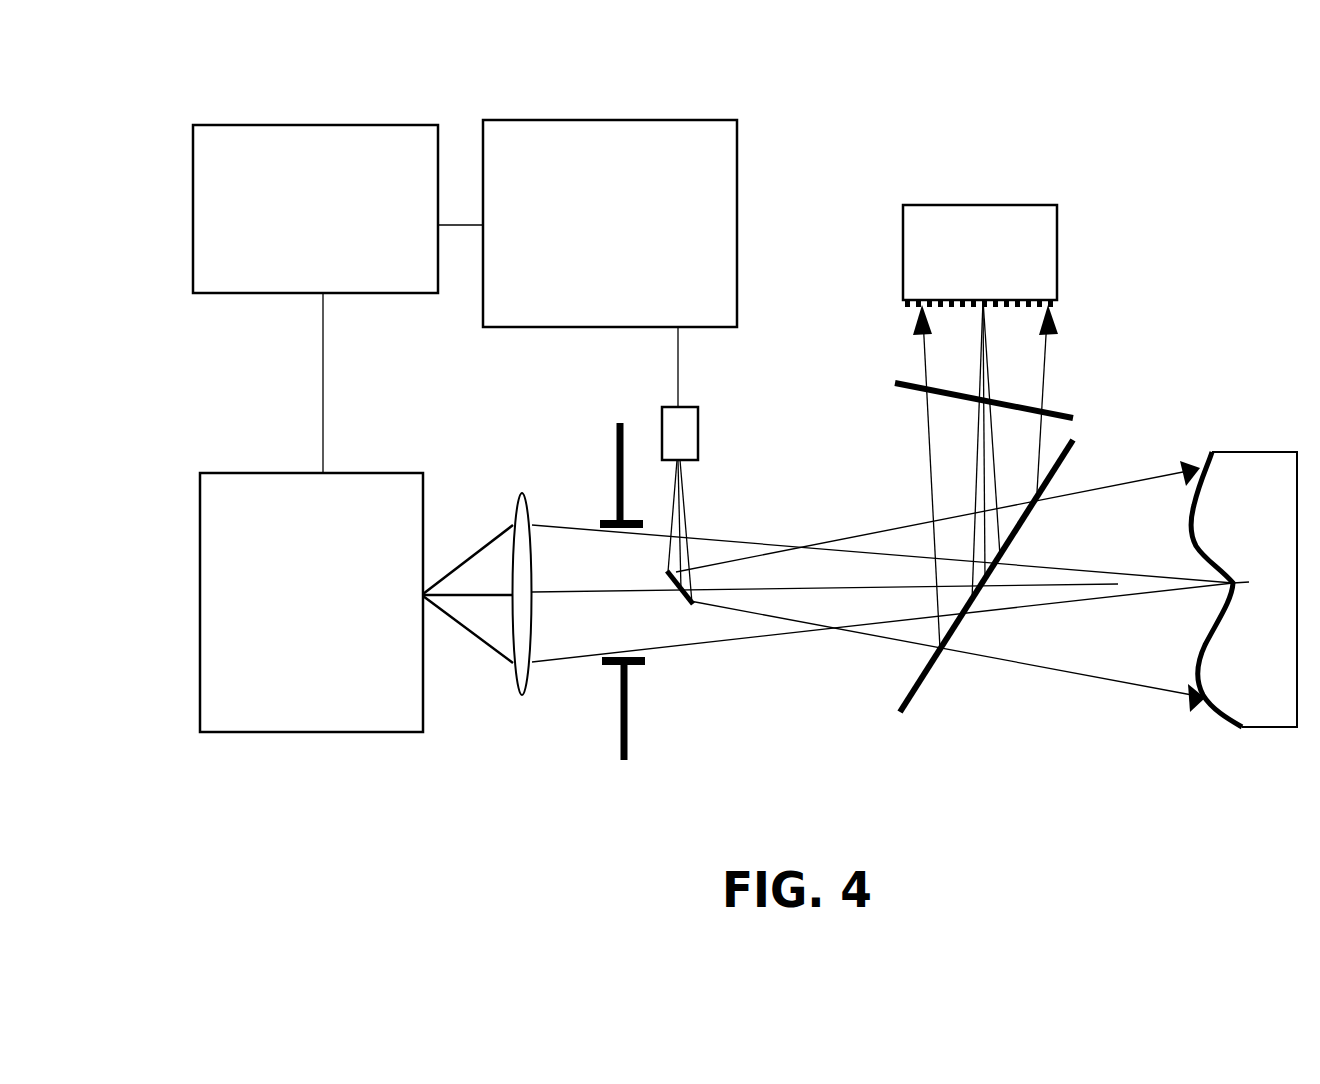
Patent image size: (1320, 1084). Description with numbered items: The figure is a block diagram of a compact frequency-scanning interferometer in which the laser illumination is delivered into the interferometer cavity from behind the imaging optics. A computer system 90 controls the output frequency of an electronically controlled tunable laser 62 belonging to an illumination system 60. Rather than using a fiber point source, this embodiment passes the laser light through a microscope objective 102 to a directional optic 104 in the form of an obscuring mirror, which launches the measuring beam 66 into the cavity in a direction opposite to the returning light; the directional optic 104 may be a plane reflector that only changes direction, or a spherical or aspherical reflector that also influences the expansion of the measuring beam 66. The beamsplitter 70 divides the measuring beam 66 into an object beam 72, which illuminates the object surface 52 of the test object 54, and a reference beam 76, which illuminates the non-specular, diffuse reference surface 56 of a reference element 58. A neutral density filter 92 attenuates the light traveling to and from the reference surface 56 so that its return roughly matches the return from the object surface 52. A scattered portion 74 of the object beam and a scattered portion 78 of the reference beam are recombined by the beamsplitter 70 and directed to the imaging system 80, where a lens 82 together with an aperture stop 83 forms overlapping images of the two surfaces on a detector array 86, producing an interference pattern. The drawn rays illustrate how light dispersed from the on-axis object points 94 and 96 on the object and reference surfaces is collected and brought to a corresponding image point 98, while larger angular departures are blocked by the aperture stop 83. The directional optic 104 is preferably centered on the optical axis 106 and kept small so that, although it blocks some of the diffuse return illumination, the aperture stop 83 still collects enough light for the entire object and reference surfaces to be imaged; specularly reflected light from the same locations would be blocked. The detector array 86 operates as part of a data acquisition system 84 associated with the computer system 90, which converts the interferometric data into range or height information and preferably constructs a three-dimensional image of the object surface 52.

The object surface 52 is at (1193, 507).
The test object 54 is at (1201, 589).
The reference surface 56 is at (905, 306).
The reference element 58 is at (956, 276).
The illumination system 60 is at (752, 173).
The tunable laser 62 is at (610, 263).
The measuring beam 66 is at (905, 527).
The beamsplitter 70 is at (915, 672).
The object beam 72 is at (1120, 683).
The scattered portion of the object beam 74 is at (1042, 605).
The reference beam 76 is at (1047, 370).
The scattered portion of the reference beam 78 is at (993, 488).
The imaging system 80 is at (505, 494).
The lens 82 is at (526, 696).
The aperture stop 83 is at (634, 660).
The data acquisition system 84 is at (185, 579).
The detector array 86 is at (311, 602).
The computer system 90 is at (338, 299).
The neutral density filter 92 is at (915, 393).
The object point 94 is at (1230, 600).
The object point 96 is at (980, 307).
The image point 98 is at (428, 600).
The microscope objective 102 is at (700, 437).
The directional optic 104 is at (667, 582).
The optical axis 106 is at (617, 600).